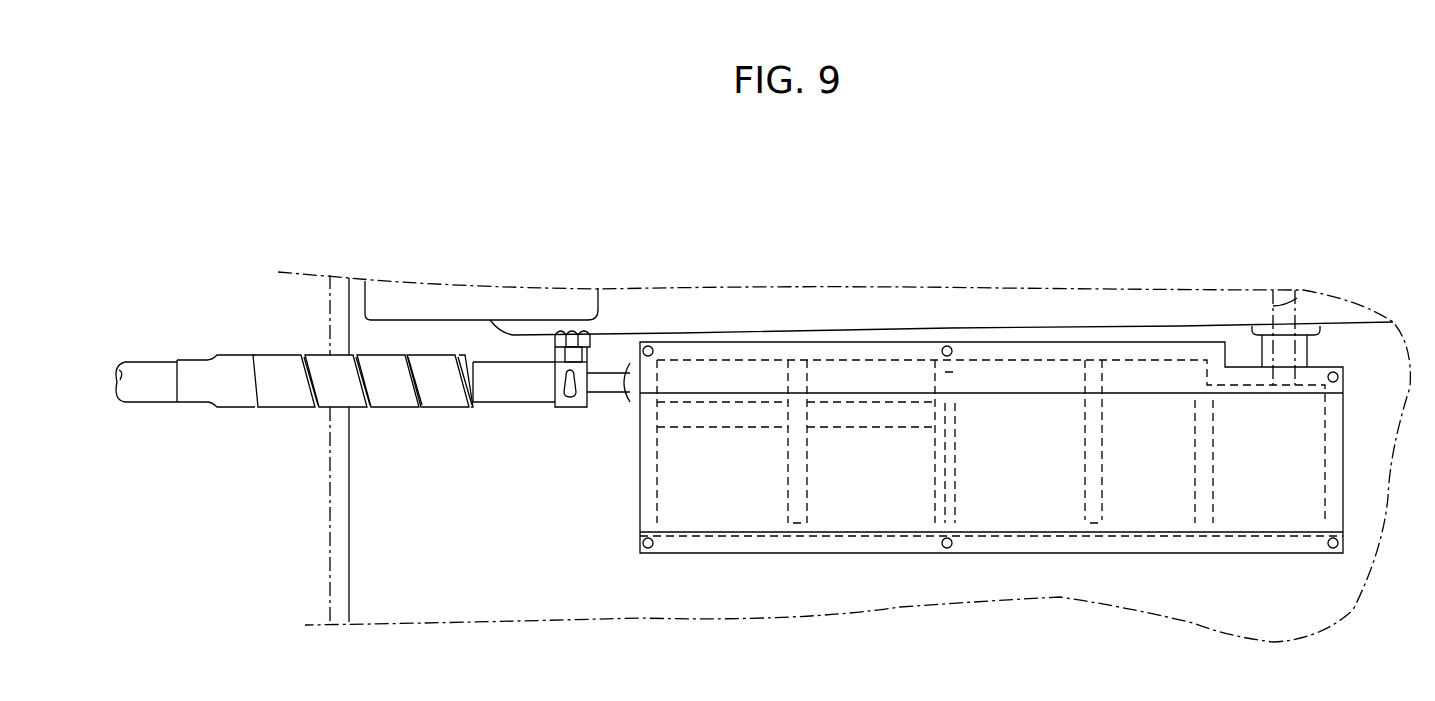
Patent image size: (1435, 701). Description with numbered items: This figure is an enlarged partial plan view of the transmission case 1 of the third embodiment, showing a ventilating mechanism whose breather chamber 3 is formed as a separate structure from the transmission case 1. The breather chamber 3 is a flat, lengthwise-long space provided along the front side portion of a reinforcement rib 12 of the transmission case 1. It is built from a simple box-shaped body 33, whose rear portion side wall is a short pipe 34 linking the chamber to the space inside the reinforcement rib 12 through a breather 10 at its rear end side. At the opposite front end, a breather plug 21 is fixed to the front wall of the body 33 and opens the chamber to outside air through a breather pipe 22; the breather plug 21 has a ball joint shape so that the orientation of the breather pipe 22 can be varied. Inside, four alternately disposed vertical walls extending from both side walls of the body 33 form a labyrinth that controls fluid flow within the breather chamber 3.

The transmission case 1 is at (335, 522).
The breather chamber 3 is at (991, 490).
The breather 10 is at (1297, 298).
The reinforcement rib 12 is at (847, 333).
The breather plug 21 is at (618, 384).
The breather pipe 22 is at (293, 405).
The body 33 is at (1233, 542).
The short pipe 34 is at (1307, 345).